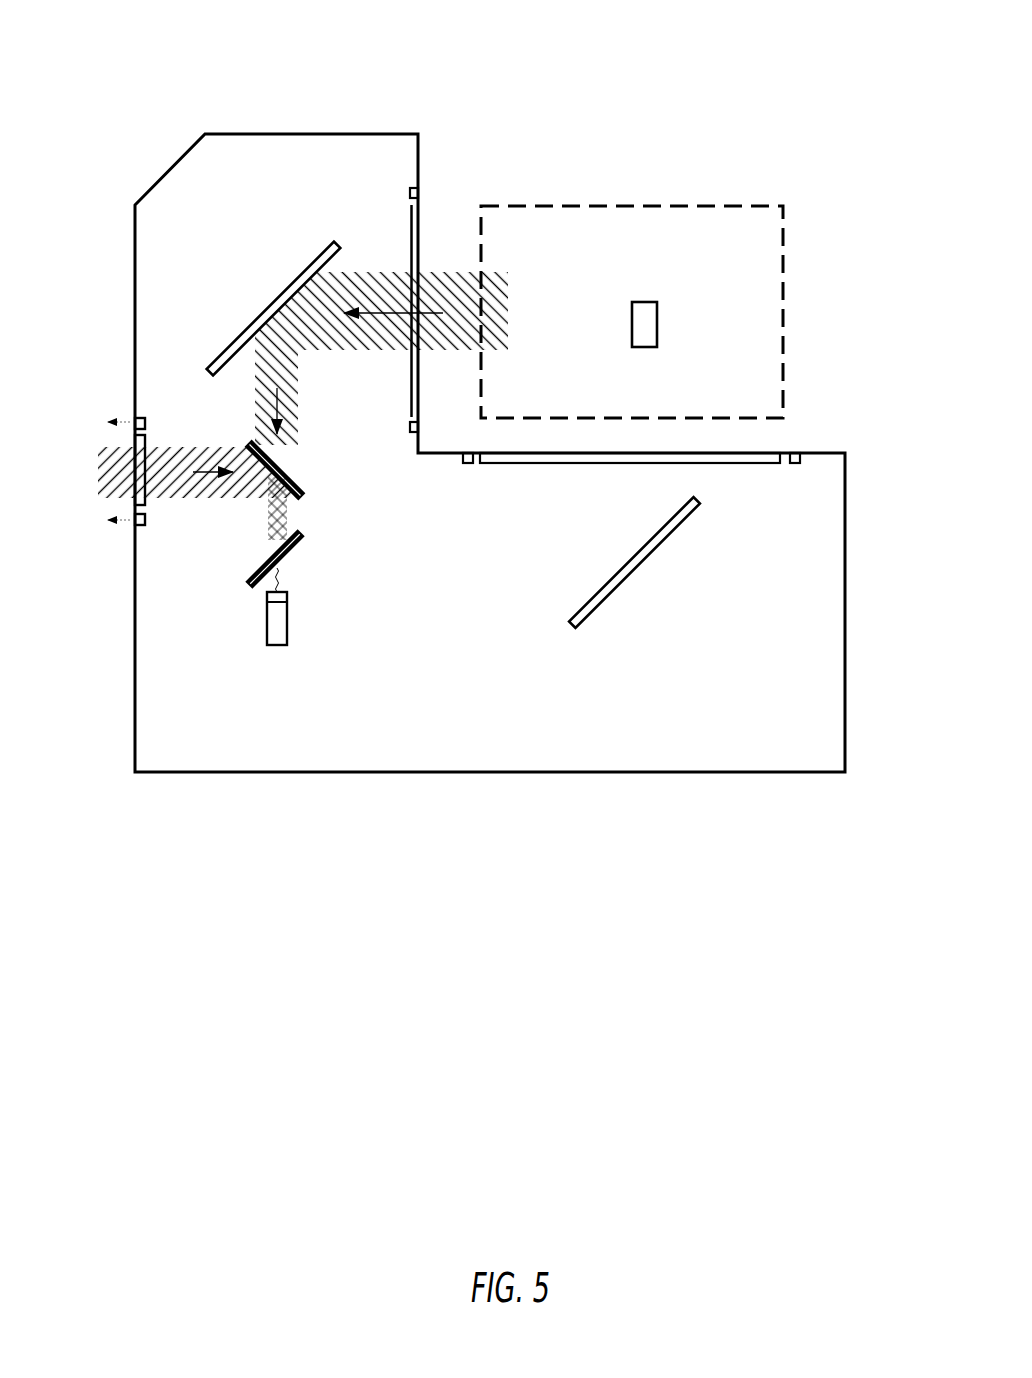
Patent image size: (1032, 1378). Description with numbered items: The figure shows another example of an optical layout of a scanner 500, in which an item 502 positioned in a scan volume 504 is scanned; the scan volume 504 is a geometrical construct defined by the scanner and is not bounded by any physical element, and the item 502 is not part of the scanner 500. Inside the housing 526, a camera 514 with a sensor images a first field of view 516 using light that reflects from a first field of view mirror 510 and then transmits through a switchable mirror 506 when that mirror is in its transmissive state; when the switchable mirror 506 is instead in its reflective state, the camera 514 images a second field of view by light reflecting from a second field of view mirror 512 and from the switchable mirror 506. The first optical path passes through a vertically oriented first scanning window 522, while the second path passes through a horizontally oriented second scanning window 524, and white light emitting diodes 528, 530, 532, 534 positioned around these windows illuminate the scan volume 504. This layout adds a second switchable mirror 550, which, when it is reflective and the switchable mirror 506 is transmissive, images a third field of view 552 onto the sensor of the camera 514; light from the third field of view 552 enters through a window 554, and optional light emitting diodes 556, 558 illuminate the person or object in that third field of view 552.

The scanner 500 is at (276, 79).
The item 502 is at (658, 325).
The scan volume 504 is at (633, 206).
The switchable mirror 506 is at (258, 571).
The first field of view mirror 510 is at (221, 351).
The second field of view mirror 512 is at (584, 620).
The camera 514 is at (267, 616).
The first field of view 516 is at (508, 290).
The first scanning window 522 is at (410, 395).
The second scanning window 524 is at (762, 464).
The housing 526 is at (135, 318).
The white light emitting diode 528 is at (410, 191).
The white light emitting diode 530 is at (410, 429).
The white light emitting diode 532 is at (466, 464).
The white light emitting diode 534 is at (801, 460).
The second switchable mirror 550 is at (303, 497).
The third field of view 552 is at (98, 478).
The window 554 is at (146, 500).
The light emitting diode 556 is at (146, 423).
The light emitting diode 558 is at (146, 526).